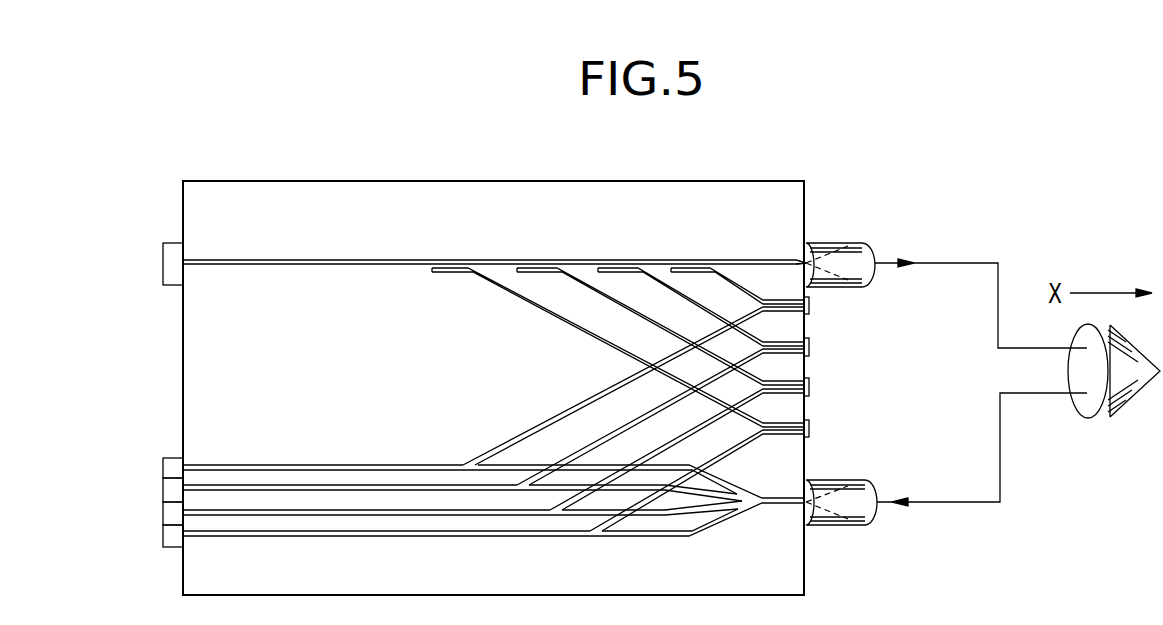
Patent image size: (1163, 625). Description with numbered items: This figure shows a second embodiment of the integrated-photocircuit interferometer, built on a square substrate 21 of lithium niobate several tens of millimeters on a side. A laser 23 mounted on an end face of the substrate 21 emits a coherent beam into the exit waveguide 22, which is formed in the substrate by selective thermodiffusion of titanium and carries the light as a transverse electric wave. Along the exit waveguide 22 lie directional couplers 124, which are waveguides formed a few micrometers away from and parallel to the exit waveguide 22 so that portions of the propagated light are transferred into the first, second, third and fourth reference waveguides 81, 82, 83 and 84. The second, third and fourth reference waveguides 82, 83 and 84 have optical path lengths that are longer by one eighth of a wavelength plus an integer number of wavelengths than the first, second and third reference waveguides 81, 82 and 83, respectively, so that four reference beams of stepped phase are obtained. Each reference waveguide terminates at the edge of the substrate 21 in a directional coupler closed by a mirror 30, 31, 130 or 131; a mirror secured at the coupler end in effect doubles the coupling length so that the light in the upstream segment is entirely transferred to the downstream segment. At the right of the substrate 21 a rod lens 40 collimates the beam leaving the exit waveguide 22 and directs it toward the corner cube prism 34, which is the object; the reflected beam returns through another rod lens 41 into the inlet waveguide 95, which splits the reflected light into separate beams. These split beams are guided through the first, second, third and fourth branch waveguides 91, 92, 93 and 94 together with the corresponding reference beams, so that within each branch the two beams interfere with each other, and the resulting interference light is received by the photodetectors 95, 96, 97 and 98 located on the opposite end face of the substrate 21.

The substrate 21 is at (490, 181).
The exit waveguide 22 is at (276, 259).
The laser 23 is at (165, 256).
The directional coupler 124 is at (618, 323).
The first reference waveguide 81 is at (745, 283).
The second reference waveguide 82 is at (685, 294).
The third reference waveguide 83 is at (619, 303).
The fourth reference waveguide 84 is at (573, 322).
The mirror 30 is at (810, 306).
The mirror 31 is at (810, 347).
The mirror 130 is at (810, 388).
The mirror 131 is at (810, 429).
The first branch waveguide 91 is at (336, 464).
The second branch waveguide 92 is at (396, 484).
The third branch waveguide 93 is at (424, 509).
The fourth branch waveguide 94 is at (427, 537).
The photodetector 95 is at (165, 466).
The photodetector 96 is at (166, 491).
The photodetector 97 is at (168, 515).
The photodetector 98 is at (166, 537).
The rod lens 40 is at (848, 243).
The rod lens 41 is at (843, 515).
The corner cube prism 34 is at (1101, 420).